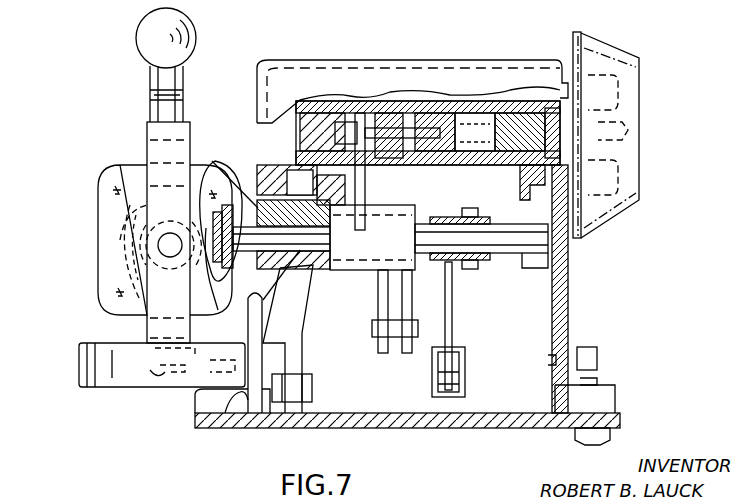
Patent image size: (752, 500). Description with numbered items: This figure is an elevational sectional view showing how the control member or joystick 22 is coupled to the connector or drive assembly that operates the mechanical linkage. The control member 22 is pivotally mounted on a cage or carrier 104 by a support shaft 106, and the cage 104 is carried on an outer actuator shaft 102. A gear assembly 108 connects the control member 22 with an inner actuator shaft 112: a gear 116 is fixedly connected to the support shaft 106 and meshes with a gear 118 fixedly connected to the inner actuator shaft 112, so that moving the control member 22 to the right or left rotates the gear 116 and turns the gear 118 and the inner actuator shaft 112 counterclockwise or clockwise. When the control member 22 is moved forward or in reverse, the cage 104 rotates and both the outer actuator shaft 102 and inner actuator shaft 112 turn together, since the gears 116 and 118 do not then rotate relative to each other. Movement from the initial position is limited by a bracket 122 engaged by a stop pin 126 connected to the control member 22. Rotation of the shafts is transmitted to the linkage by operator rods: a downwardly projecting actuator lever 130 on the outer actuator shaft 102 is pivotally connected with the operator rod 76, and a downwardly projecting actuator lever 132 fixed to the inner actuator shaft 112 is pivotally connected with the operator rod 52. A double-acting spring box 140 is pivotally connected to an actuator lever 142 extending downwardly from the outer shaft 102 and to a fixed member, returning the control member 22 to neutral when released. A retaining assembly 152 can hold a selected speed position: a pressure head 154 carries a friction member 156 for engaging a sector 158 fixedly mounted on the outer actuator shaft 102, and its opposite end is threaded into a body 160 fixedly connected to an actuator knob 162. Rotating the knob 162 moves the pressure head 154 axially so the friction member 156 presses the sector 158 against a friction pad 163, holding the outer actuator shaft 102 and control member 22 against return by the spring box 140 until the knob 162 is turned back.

The control member 22 is at (150, 102).
The operator rod 52 is at (465, 393).
The operator rod 76 is at (380, 322).
The outer actuator shaft 102 is at (330, 275).
The cage 104 is at (101, 182).
The support shaft 106 is at (160, 252).
The gear assembly 108 is at (200, 185).
The inner actuator shaft 112 is at (492, 258).
The gear 116 is at (100, 207).
The gear 118 is at (242, 210).
The bracket 122 is at (79, 365).
The stop pin 126 is at (150, 384).
The actuator lever 130 is at (405, 350).
The actuator lever 132 is at (455, 320).
The spring box 140 is at (272, 416).
The actuator lever 142 is at (312, 383).
The retaining assembly 152 is at (495, 56).
The pressure head 154 is at (466, 92).
The friction member 156 is at (395, 110).
The sector 158 is at (366, 180).
The body 160 is at (512, 165).
The actuator knob 162 is at (640, 146).
The friction pad 163 is at (330, 118).